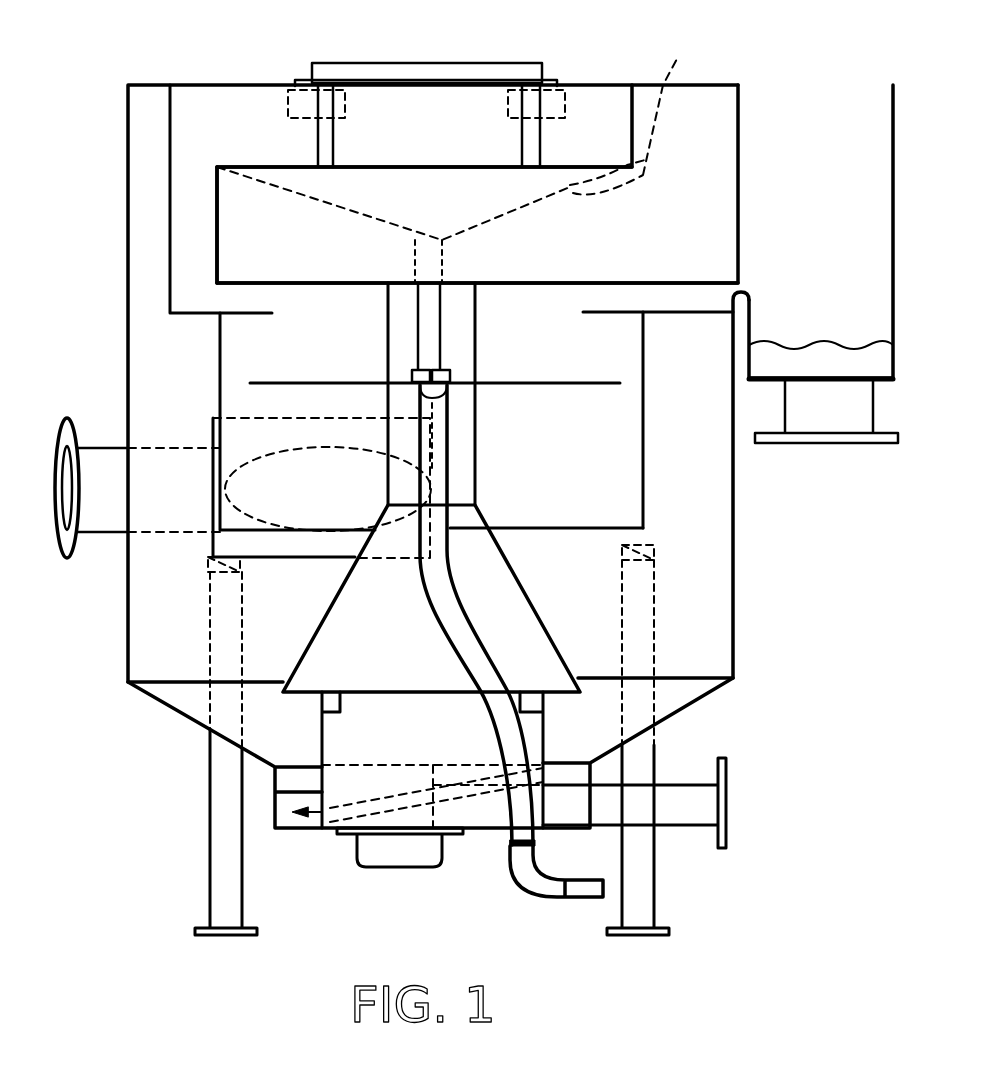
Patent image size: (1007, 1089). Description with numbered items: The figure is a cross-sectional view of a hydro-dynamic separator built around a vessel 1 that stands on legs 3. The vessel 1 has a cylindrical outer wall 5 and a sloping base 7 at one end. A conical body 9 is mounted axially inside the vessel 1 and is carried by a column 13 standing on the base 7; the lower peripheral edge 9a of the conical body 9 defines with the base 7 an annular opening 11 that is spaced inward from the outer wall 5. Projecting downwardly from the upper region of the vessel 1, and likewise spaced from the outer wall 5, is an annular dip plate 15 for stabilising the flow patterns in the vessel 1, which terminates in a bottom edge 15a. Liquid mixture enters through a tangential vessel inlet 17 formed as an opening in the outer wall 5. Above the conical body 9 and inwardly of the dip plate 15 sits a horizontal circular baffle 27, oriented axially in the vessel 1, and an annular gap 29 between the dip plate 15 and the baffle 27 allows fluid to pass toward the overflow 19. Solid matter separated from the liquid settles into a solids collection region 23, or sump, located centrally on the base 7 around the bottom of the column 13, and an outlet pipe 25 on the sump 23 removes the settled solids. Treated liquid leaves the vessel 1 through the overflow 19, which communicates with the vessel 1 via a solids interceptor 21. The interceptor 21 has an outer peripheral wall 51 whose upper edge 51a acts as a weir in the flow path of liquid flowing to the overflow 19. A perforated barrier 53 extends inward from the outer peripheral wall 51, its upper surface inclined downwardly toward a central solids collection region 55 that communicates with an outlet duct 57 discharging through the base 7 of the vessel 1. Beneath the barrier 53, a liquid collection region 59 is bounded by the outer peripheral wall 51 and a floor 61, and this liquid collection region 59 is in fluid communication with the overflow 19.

The vessel 1 is at (748, 590).
The legs 3 is at (218, 808).
The cylindrical outer wall 5 is at (738, 643).
The sloping base 7 is at (717, 693).
The conical body 9 is at (335, 635).
The lower peripheral edge 9a is at (283, 694).
The annular opening 11 is at (283, 733).
The column 13 is at (322, 785).
The annular dip plate 15 is at (643, 475).
The bottom edge 15a is at (643, 528).
The tangential vessel inlet 17 is at (90, 447).
The overflow 19 is at (790, 218).
The solids interceptor 21 is at (249, 145).
The solids collection region 23 is at (570, 813).
The outlet pipe 25 is at (697, 806).
The horizontal circular baffle 27 is at (280, 383).
The annular gap 29 is at (627, 380).
The outer peripheral wall 51 is at (217, 207).
The upper edge 51a is at (217, 167).
The perforated barrier 53 is at (644, 110).
The central solids collection region 55 is at (445, 248).
The outlet duct 57 is at (430, 330).
The liquid collection region 59 is at (268, 246).
The floor 61 is at (297, 287).